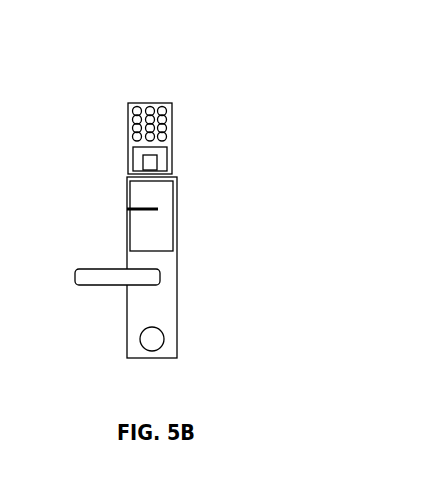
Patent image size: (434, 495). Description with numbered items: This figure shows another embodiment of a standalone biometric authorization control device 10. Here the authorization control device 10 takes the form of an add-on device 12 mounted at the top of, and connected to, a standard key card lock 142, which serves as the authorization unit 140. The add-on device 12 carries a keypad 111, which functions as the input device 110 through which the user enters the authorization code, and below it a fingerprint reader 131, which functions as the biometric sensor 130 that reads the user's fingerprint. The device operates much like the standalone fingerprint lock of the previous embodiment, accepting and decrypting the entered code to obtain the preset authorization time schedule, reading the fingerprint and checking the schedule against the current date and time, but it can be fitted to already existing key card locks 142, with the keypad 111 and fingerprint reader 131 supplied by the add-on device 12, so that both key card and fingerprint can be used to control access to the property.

The authorization control device 10 is at (128, 82).
The add-on device 12 is at (167, 99).
The input device 110 is at (164, 135).
The keypad 111 is at (173, 122).
The biometric sensor 130 is at (164, 151).
The fingerprint reader 131 is at (173, 157).
The authorization unit 140 is at (164, 267).
The key card lock 142 is at (167, 303).